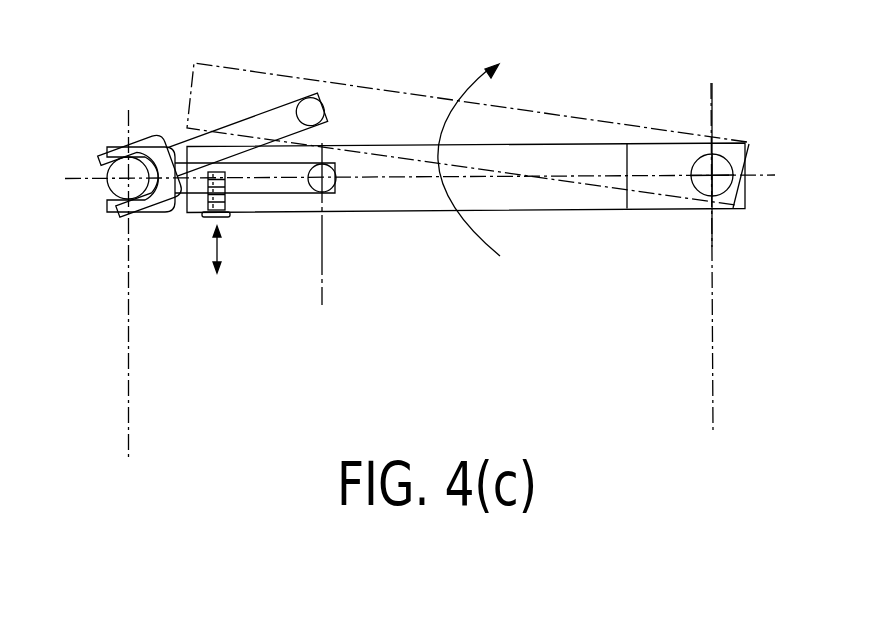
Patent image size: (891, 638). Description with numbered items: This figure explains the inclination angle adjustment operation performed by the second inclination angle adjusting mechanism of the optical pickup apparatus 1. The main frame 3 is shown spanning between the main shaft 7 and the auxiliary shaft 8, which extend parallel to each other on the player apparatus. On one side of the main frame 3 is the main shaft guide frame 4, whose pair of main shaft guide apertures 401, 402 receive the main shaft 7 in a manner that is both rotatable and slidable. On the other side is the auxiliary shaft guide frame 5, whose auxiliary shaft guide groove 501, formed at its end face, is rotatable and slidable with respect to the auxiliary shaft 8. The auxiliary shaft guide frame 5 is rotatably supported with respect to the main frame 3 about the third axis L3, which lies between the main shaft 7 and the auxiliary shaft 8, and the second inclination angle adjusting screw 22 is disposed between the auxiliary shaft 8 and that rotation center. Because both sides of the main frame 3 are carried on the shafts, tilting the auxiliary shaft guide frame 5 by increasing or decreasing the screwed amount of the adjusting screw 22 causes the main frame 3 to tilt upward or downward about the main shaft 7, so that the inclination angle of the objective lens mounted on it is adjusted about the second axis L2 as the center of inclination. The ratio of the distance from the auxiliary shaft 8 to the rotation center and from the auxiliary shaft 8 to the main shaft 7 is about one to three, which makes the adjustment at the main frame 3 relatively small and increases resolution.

The optical pickup apparatus 1 is at (322, 278).
The main frame 3 is at (131, 394).
The main shaft guide frame 4 is at (672, 185).
The auxiliary shaft guide frame 5 is at (258, 185).
The main shaft 7 is at (723, 181).
The auxiliary shaft 8 is at (108, 173).
The second inclination angle adjusting screw 22 is at (223, 175).
The main shaft guide aperture 401 is at (773, 167).
The main shaft guide aperture 402 is at (728, 163).
The auxiliary shaft guide groove 501 is at (108, 192).
The second axis L2 is at (713, 172).
The third axis L3 is at (327, 186).